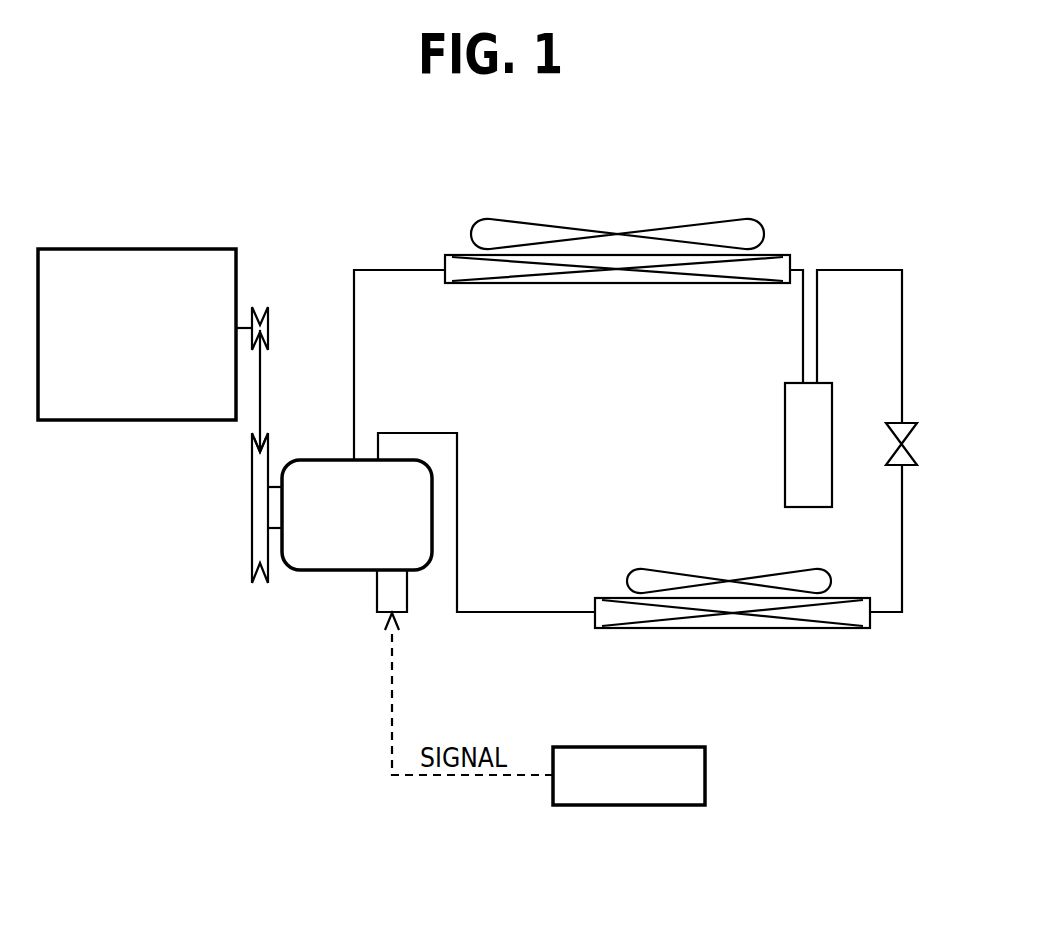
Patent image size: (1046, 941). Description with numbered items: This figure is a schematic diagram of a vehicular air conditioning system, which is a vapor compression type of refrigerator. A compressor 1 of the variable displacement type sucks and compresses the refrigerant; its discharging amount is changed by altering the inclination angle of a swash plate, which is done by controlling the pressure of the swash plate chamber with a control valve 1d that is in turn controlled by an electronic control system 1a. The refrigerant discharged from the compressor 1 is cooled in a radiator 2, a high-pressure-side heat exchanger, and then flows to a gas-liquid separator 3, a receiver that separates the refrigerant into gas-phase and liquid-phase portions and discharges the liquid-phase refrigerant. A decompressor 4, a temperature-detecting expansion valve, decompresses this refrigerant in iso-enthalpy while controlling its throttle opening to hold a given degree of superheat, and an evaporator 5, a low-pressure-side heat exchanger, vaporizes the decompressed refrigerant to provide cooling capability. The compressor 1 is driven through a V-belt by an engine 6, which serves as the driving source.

The compressor 1 is at (318, 447).
The electronic control system 1a is at (622, 808).
The control valve 1d is at (377, 599).
The radiator 2 is at (620, 285).
The gas-liquid separator 3 is at (784, 440).
The decompressor 4 is at (918, 455).
The evaporator 5 is at (728, 632).
The engine 6 is at (138, 423).